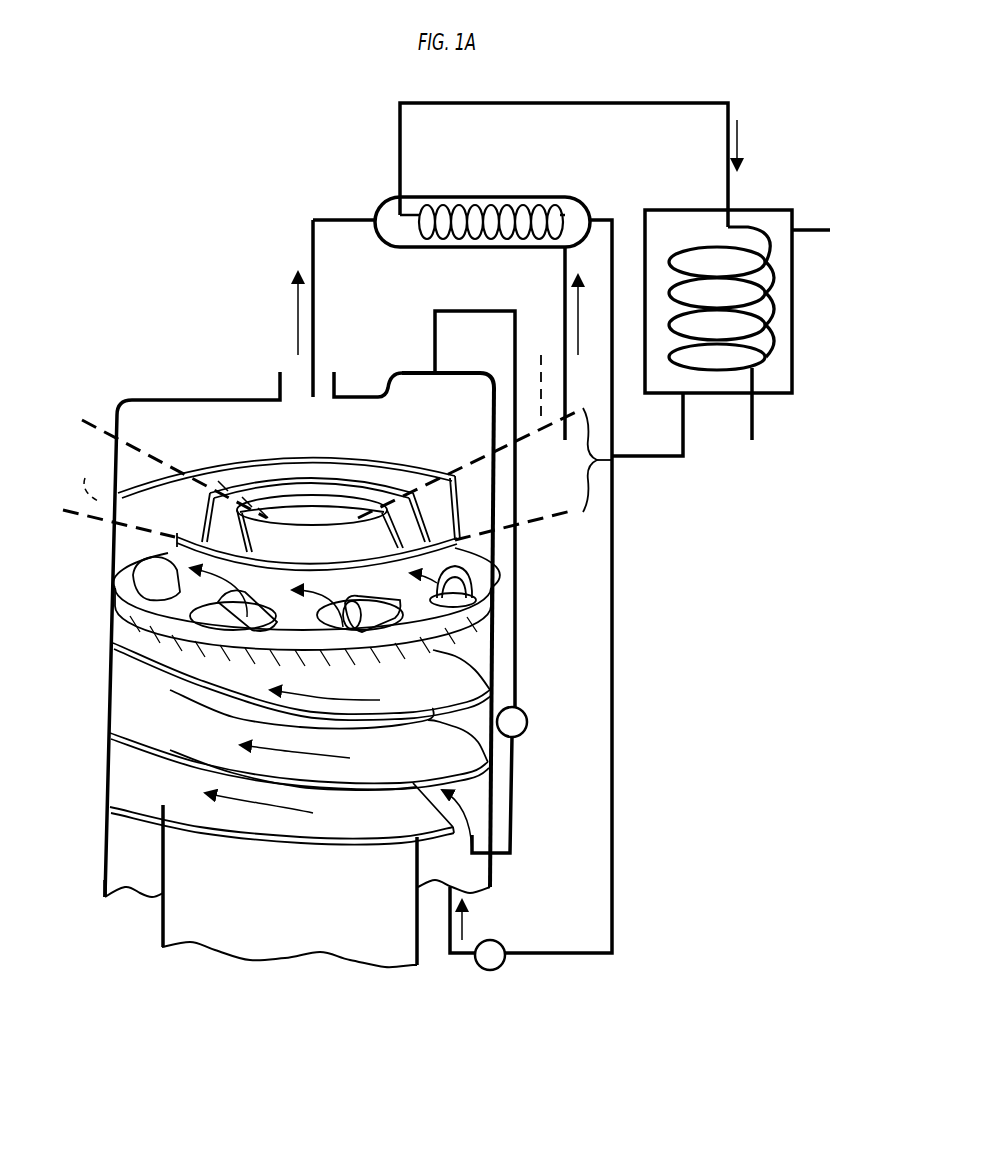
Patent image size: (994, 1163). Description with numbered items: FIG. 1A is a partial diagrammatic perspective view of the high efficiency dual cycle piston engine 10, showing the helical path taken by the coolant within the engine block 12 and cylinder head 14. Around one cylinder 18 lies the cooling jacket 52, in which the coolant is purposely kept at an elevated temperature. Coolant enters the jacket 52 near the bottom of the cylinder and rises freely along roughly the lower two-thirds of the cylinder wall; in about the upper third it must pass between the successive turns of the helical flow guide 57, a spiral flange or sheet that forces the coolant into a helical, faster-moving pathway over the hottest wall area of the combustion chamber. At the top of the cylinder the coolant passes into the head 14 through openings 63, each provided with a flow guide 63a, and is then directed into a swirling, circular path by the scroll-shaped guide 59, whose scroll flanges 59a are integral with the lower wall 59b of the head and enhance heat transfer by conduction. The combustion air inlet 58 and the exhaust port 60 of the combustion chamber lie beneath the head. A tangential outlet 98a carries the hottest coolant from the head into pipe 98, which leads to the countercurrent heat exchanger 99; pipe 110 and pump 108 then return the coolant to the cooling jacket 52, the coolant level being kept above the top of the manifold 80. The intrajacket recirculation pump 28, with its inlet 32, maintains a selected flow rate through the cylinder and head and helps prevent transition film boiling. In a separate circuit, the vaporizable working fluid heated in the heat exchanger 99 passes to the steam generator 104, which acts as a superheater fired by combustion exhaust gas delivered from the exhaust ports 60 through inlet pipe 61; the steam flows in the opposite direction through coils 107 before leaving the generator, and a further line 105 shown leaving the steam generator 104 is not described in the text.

The high efficiency internal combustion dual cycle piston engine 10 is at (112, 393).
The engine block 12 is at (105, 840).
The cylinder head 14 is at (497, 545).
The cylinder 18 is at (235, 912).
The intrajacket coolant recirculation pump 28 is at (525, 710).
The inlet 32 is at (514, 702).
The cooling jacket 52 is at (192, 420).
The helical flow guide 57 is at (130, 748).
The combustion air inlet 58 is at (321, 484).
The scroll-shaped guide 59 is at (290, 453).
The scroll flanges 59a is at (330, 498).
The lower wall of the cylinder head 59b is at (383, 645).
The exhaust port 60 is at (539, 374).
The inlet pipe 61 is at (655, 462).
The openings 63 is at (808, 232).
The flow guide 63a is at (270, 607).
The manifold 80 is at (437, 372).
The pipe 98 is at (316, 258).
The outlet 98a is at (292, 385).
The countercurrent heat exchanger 99 is at (452, 197).
The steam generator 104 is at (740, 211).
The outlet conduit 105 is at (752, 430).
The coils 107 is at (755, 358).
The pump 108 is at (498, 941).
The pipe 110 is at (533, 102).